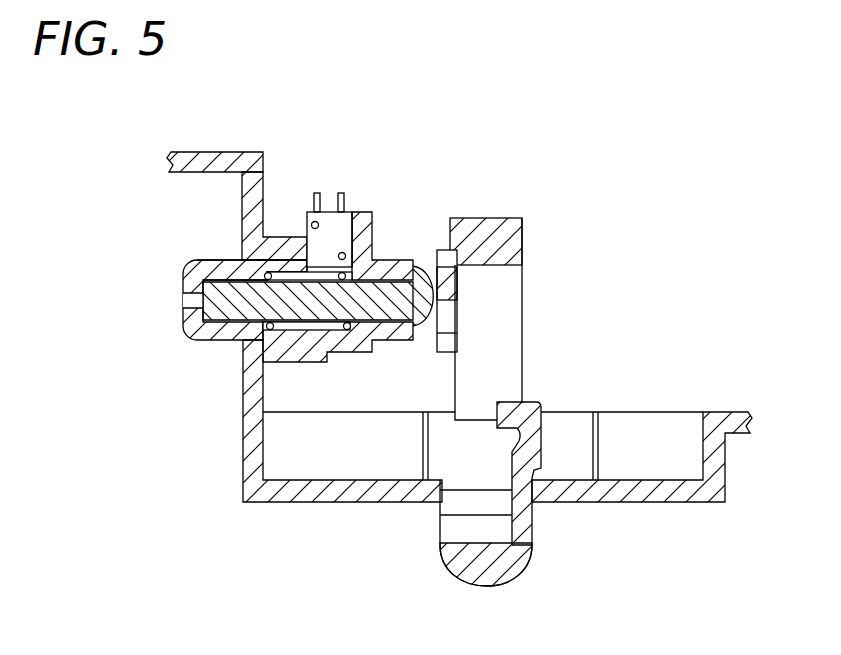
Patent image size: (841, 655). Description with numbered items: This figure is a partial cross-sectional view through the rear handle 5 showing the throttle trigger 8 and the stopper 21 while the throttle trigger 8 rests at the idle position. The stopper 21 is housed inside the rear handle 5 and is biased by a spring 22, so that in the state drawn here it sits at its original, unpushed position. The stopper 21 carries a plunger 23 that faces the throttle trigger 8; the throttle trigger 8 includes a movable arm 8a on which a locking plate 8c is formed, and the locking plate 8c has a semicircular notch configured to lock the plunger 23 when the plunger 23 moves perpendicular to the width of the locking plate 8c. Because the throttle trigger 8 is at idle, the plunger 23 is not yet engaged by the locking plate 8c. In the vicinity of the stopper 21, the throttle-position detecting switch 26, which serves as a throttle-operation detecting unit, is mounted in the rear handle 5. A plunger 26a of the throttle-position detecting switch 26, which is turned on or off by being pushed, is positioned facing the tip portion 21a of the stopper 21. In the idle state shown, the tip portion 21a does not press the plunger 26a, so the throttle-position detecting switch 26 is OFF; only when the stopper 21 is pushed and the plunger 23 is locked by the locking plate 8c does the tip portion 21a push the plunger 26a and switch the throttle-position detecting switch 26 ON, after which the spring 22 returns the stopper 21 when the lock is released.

The rear handle 5 is at (697, 497).
The throttle trigger 8 is at (521, 553).
The movable arm 8a is at (495, 225).
The locking plate 8c is at (457, 290).
The stopper 21 is at (186, 318).
The tip portion 21a is at (270, 262).
The spring 22 is at (263, 327).
The plunger 23 is at (383, 298).
The throttle-position detecting switch 26 is at (330, 214).
The plunger 26a is at (307, 263).